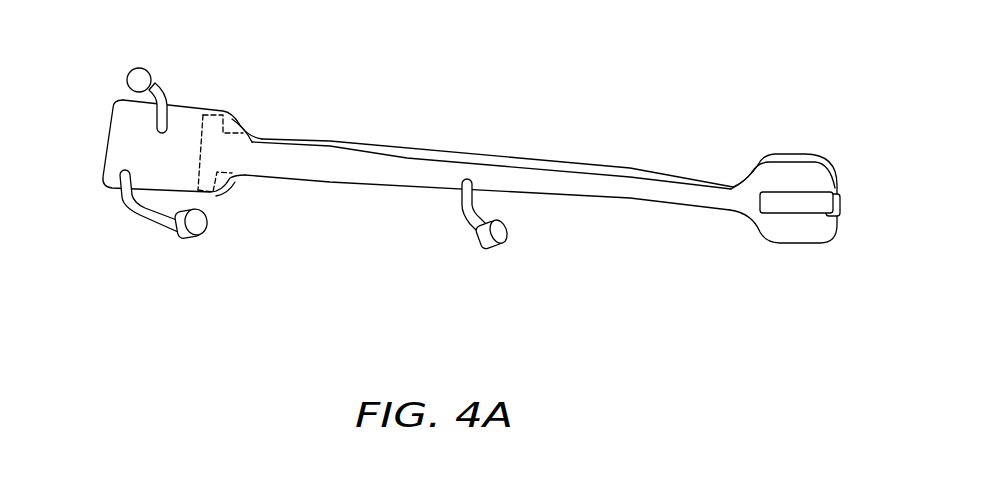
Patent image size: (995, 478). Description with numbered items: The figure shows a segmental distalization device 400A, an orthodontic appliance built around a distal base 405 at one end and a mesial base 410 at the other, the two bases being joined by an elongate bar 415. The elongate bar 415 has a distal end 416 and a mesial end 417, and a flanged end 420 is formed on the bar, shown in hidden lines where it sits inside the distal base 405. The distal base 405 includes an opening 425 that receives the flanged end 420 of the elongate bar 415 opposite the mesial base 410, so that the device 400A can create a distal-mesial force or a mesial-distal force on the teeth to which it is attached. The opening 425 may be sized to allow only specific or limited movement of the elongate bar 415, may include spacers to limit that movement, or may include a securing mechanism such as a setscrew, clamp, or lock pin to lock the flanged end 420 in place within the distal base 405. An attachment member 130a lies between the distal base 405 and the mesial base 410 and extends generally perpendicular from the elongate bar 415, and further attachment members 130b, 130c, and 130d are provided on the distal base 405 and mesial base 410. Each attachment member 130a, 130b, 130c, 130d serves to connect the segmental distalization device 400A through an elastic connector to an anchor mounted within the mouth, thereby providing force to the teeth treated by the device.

The segmental distalization device 400A is at (560, 68).
The distal base 405 is at (123, 131).
The mesial base 410 is at (785, 233).
The elongate bar 415 is at (391, 163).
The distal end 416 is at (240, 165).
The mesial end 417 is at (734, 189).
The flanged end 420 is at (216, 147).
The opening 425 is at (234, 182).
The attachment member 130a is at (476, 248).
The attachment member 130b is at (178, 239).
The attachment member 130c is at (147, 67).
The attachment member 130d is at (812, 185).